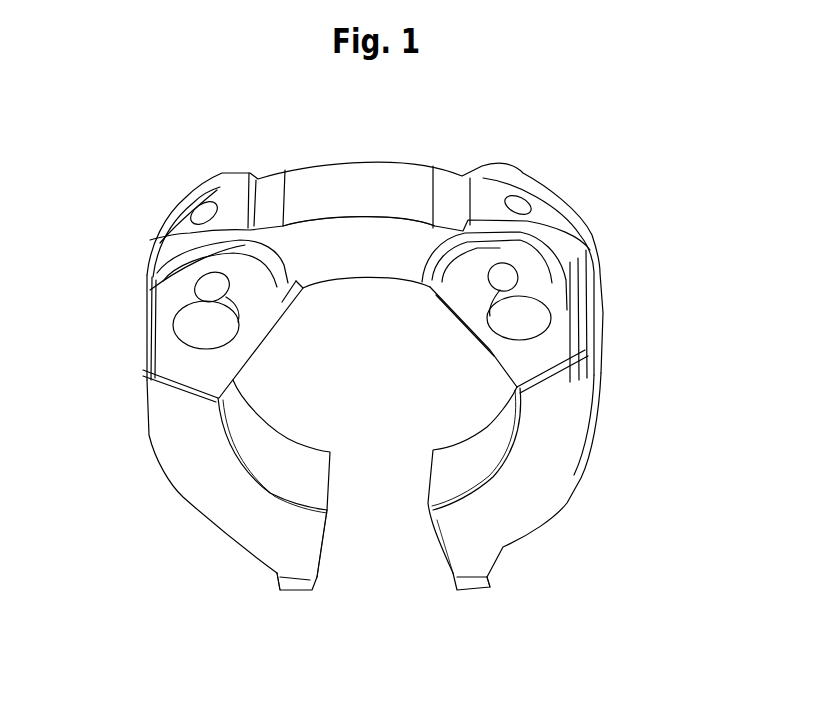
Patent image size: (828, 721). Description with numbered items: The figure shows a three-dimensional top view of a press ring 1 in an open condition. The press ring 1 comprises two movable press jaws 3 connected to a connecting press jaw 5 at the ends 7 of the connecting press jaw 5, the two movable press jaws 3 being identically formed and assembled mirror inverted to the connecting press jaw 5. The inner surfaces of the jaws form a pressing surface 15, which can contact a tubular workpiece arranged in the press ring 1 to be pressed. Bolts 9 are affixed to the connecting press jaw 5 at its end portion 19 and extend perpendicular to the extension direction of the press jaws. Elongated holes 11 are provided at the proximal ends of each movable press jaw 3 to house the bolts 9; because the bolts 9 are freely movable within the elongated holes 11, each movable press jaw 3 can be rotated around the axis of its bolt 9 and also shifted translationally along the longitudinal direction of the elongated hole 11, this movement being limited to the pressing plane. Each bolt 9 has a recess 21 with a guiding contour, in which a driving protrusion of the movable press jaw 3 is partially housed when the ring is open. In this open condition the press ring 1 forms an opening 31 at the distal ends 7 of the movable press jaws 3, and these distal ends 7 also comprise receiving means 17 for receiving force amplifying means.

The press ring 1 is at (660, 133).
The movable press jaw 3 is at (185, 480).
The connecting press jaw 5 is at (360, 175).
The ends 7 is at (301, 614).
The bolt 9 is at (193, 323).
The elongated hole 11 is at (163, 338).
The pressing surface 15 is at (287, 482).
The receiving means 17 is at (260, 593).
The end portion 19 is at (163, 184).
The recess 21 is at (220, 312).
The opening 31 is at (390, 610).